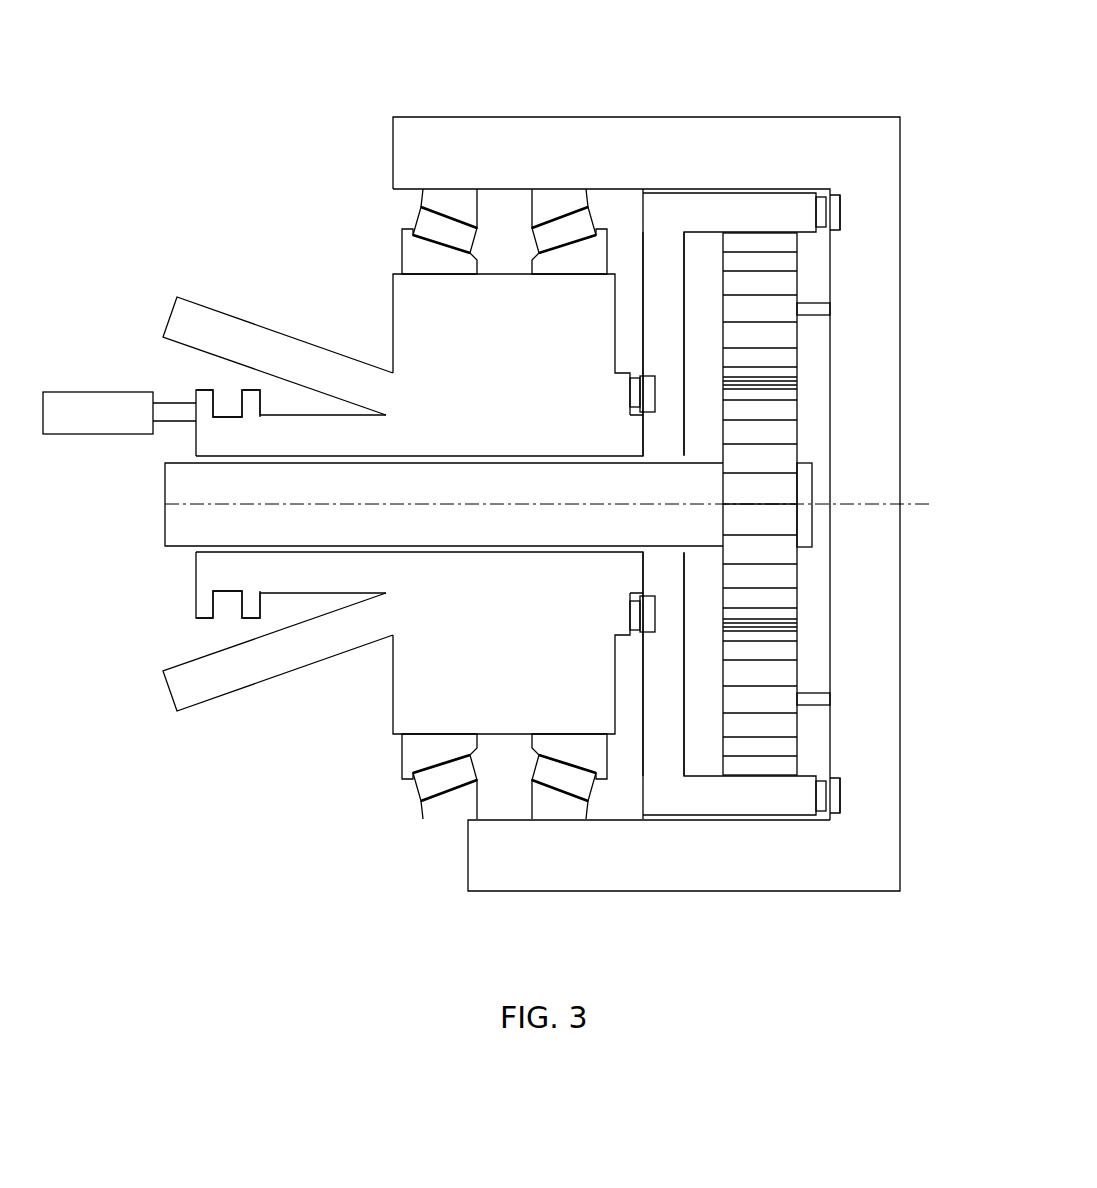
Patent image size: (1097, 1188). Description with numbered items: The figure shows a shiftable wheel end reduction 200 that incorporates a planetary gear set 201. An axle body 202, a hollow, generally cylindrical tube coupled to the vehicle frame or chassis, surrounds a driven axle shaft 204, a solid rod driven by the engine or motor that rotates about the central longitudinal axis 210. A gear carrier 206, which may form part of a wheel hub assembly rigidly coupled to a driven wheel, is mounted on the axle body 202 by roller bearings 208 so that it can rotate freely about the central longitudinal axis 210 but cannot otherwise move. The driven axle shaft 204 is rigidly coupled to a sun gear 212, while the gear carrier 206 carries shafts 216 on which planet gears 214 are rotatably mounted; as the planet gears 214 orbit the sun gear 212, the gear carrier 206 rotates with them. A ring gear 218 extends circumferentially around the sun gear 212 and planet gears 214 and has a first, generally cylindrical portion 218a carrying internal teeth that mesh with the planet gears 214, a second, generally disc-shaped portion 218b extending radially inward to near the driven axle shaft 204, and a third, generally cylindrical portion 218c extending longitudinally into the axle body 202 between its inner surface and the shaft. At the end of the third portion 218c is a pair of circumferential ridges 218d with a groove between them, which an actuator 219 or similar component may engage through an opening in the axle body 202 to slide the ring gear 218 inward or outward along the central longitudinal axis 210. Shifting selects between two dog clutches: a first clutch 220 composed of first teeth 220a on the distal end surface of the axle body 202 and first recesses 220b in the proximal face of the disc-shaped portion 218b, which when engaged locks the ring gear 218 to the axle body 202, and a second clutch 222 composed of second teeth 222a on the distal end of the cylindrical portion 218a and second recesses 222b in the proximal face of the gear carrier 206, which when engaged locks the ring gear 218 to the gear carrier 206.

The shiftable wheel end reduction 200 is at (298, 42).
The planetary gear set 201 is at (806, 371).
The axle body 202 is at (243, 335).
The driven axle shaft 204 is at (167, 476).
The gear carrier 206 is at (793, 142).
The roller bearings 208 is at (562, 228).
The central longitudinal axis 210 is at (165, 505).
The sun gear 212 is at (767, 457).
The planet gears 214 is at (770, 300).
The shafts 216 is at (813, 312).
The ring gear 218 is at (349, 448).
The first generally cylindrical portion 218a is at (716, 208).
The second generally disc-shaped portion 218b is at (668, 282).
The third generally cylindrical portion 218c is at (410, 437).
The circumferential ridges 218d is at (240, 398).
The actuator 219 is at (80, 390).
The first clutch 220 is at (626, 347).
The first teeth 220a is at (633, 393).
The first recesses 220b is at (648, 393).
The second clutch 222 is at (838, 195).
The second teeth 222a is at (817, 200).
The second recesses 222b is at (843, 210).